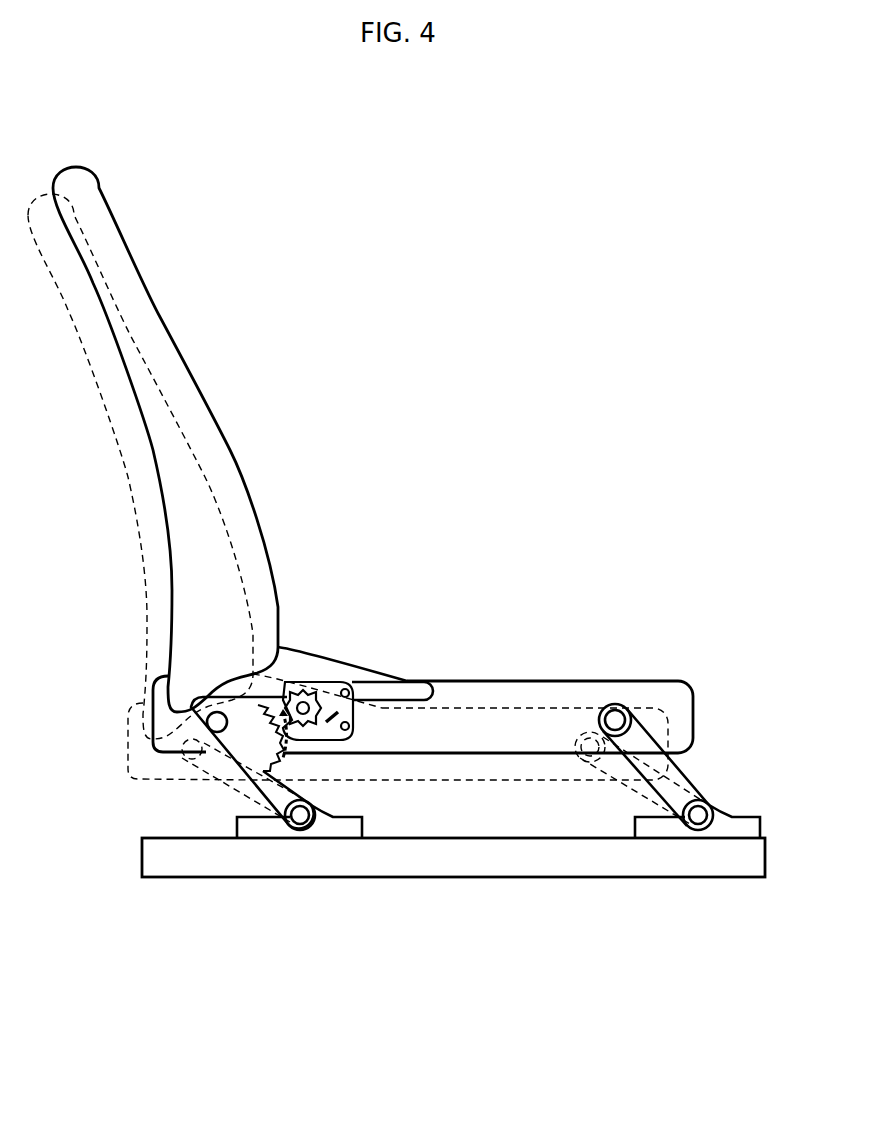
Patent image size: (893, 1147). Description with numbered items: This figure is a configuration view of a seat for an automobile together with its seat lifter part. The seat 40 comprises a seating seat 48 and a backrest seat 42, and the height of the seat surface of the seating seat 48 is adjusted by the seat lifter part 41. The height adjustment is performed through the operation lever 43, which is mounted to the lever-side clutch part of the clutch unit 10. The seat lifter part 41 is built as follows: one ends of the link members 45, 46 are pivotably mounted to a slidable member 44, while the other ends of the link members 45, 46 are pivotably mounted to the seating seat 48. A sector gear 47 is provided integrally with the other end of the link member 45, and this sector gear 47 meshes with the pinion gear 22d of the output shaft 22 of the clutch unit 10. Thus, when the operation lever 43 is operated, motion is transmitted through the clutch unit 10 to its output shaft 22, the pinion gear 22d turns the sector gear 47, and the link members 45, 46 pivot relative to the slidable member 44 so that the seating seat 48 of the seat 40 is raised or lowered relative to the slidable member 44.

The seat 40 is at (309, 389).
The backrest seat 42 is at (158, 346).
The seating seat 48 is at (563, 681).
The operation lever 43 is at (412, 688).
The output shaft 22 is at (307, 689).
The pinion gear 22d is at (321, 688).
The clutch unit 10 is at (363, 731).
The link member 45 is at (243, 764).
The sector gear 47 is at (285, 756).
The link member 46 is at (675, 776).
The seat lifter part 41 is at (450, 898).
The slidable member 44 is at (557, 866).